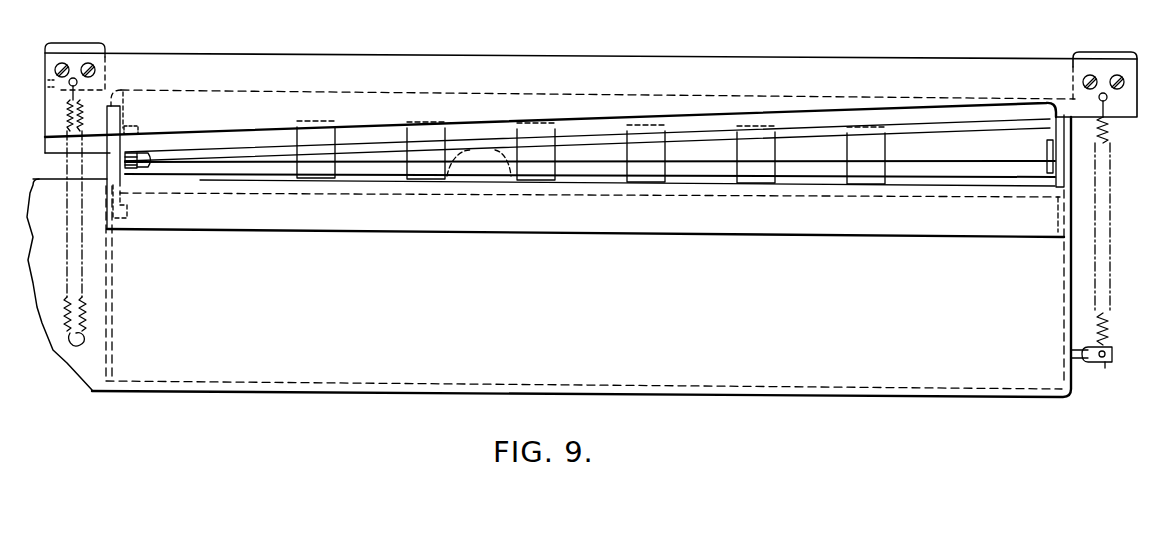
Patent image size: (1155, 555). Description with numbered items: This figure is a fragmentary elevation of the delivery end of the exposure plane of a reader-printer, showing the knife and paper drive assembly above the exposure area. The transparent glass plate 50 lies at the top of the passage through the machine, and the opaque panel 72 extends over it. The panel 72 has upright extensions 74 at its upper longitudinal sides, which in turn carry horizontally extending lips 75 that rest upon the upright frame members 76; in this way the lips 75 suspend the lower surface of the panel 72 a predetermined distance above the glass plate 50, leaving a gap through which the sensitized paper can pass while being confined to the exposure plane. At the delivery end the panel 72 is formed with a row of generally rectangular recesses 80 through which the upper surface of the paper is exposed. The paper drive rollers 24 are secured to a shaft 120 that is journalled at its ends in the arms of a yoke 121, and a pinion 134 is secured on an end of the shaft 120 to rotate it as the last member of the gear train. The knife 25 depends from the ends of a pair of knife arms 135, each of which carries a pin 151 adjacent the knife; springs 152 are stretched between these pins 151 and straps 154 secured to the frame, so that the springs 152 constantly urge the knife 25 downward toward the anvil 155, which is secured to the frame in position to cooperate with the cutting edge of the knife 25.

The transport rollers 24 is at (921, 86).
The knife 25 is at (482, 52).
The transparent glass plate 50 is at (639, 192).
The opaque panel 72 is at (199, 166).
The upright extensions 74 is at (129, 127).
The horizontally extending lips 75 is at (113, 102).
The upright frame members 76 is at (112, 283).
The rectangular recesses 80 is at (591, 152).
The shaft 120 is at (982, 147).
The yoke 121 is at (552, 90).
The pinion 134 is at (166, 113).
The knife arms 135 is at (61, 43).
The pin 151 is at (80, 68).
The springs 152 is at (67, 297).
The straps 154 is at (77, 342).
The anvil 155 is at (481, 232).